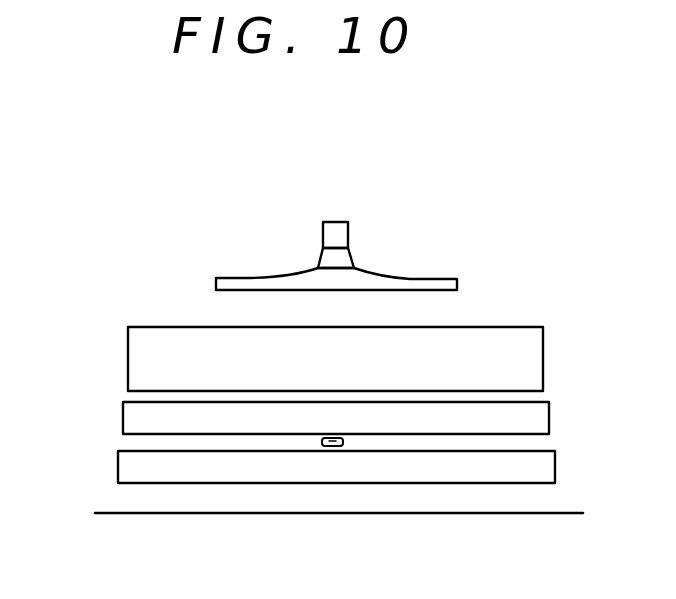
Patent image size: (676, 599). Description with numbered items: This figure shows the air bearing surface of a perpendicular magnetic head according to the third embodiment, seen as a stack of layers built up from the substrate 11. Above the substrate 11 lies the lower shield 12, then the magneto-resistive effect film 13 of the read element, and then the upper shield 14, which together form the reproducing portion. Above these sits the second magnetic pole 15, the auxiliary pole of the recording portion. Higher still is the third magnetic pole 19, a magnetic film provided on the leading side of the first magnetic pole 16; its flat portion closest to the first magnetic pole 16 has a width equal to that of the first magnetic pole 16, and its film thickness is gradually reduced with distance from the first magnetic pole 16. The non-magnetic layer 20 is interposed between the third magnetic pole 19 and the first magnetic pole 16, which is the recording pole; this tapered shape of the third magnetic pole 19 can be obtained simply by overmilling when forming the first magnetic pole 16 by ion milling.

The substrate 11 is at (137, 532).
The lower shield 12 is at (130, 469).
The magneto-resistive effect film 13 is at (330, 447).
The upper shield 14 is at (140, 424).
The second magnetic pole 15 is at (140, 362).
The first magnetic pole 16 is at (332, 235).
The third magnetic pole 19 is at (218, 281).
The non-magnetic layer 20 is at (343, 259).